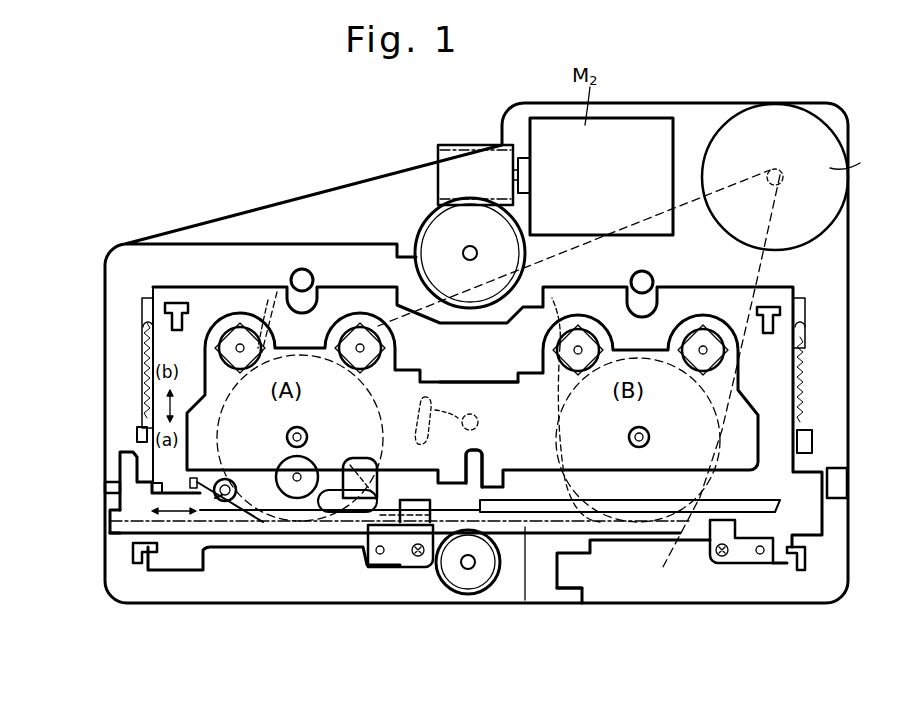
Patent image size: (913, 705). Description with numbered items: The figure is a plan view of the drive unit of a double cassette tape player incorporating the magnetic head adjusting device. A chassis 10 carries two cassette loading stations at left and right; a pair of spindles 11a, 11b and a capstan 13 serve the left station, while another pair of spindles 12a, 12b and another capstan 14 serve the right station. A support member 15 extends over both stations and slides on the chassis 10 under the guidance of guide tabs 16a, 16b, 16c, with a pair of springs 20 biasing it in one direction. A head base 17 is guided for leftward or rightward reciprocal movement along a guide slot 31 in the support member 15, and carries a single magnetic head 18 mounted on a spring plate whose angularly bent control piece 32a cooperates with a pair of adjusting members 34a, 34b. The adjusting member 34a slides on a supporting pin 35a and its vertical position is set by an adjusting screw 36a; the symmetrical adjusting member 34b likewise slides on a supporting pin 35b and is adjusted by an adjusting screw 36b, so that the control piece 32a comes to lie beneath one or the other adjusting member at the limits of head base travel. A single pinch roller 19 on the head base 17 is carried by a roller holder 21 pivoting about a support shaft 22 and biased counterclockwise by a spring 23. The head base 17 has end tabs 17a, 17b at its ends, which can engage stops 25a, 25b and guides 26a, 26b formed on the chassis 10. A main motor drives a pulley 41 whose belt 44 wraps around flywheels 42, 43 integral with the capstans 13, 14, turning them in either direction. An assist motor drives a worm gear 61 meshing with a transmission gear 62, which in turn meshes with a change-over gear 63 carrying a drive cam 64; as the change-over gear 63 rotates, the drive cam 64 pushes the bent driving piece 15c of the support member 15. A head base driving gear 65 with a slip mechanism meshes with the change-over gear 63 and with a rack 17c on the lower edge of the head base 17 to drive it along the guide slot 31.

The chassis 10 is at (244, 248).
The spindle 11a is at (237, 335).
The spindle 11b is at (358, 335).
The spindle 12a is at (583, 337).
The spindle 12b is at (710, 337).
The capstan 13 is at (287, 437).
The capstan 14 is at (650, 438).
The support member 15 is at (780, 373).
The bent driving piece 15c is at (494, 380).
The guide tab 16a is at (177, 300).
The guide tab 16b is at (775, 303).
The guide tab 16c is at (130, 560).
The head base 17 is at (310, 535).
The end tab 17a is at (120, 460).
The end tab 17b is at (480, 466).
The rack 17c is at (115, 538).
The magnetic head 18 is at (360, 500).
The pinch roller 19 is at (305, 470).
The spring 20 is at (140, 365).
The roller holder 21 is at (280, 515).
The support shaft 22 is at (218, 478).
The spring 23 is at (250, 520).
The stop 25a is at (112, 492).
The stop 25b is at (840, 492).
The guide 26a is at (135, 435).
The guide 26b is at (813, 440).
The guide slot 31 is at (778, 503).
The control piece 32a is at (420, 500).
The adjusting member 34a is at (402, 570).
The adjusting member 34b is at (738, 568).
The supporting pin 35a is at (381, 556).
The supporting pin 35b is at (762, 556).
The adjusting screw 36a is at (418, 558).
The adjusting screw 36b is at (722, 558).
The pulley 41 is at (783, 182).
The flywheel 42 is at (262, 317).
The flywheel 43 is at (606, 568).
The belt 44 is at (731, 180).
The worm gear 61 is at (466, 163).
The transmission gear 62 is at (440, 240).
The change-over gear 63 is at (555, 296).
The drive cam 64 is at (446, 415).
The head base driving gear 65 is at (473, 594).